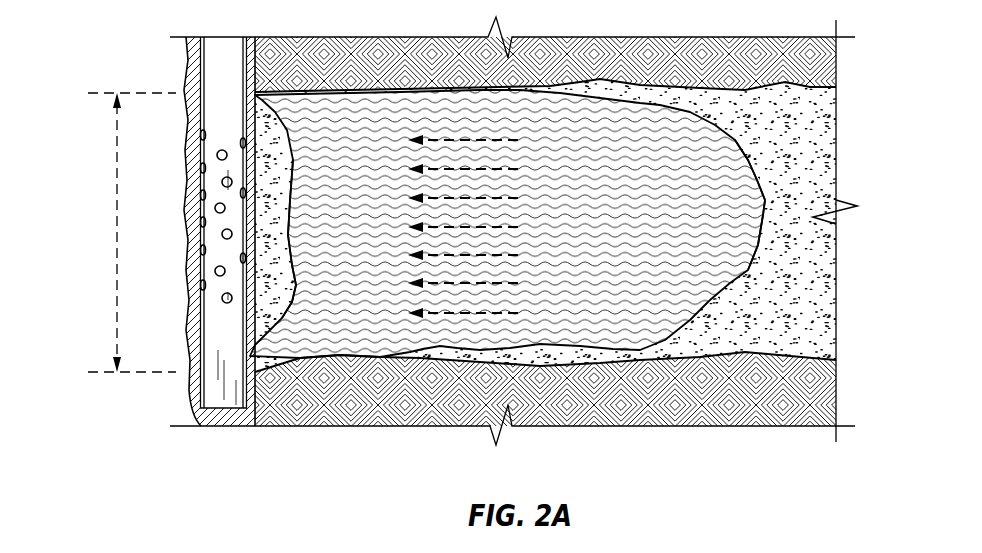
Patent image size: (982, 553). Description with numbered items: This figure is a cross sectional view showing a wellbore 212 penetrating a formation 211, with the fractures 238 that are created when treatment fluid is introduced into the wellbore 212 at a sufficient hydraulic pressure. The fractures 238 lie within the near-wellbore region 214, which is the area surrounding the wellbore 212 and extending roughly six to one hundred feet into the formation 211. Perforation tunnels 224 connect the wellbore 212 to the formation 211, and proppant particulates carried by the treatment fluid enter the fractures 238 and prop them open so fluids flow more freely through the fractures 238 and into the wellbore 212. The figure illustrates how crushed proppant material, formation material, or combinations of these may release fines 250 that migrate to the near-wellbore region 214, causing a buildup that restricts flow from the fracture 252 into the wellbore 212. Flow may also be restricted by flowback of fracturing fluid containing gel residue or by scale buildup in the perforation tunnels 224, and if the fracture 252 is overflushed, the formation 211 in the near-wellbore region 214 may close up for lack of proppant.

The formation 211 is at (820, 320).
The wellbore 212 is at (220, 373).
The near-wellbore region 214 is at (117, 251).
The perforation tunnels 224 is at (218, 154).
The fractures 238 is at (507, 224).
The fines 250 is at (286, 284).
The fracture 252 is at (762, 180).